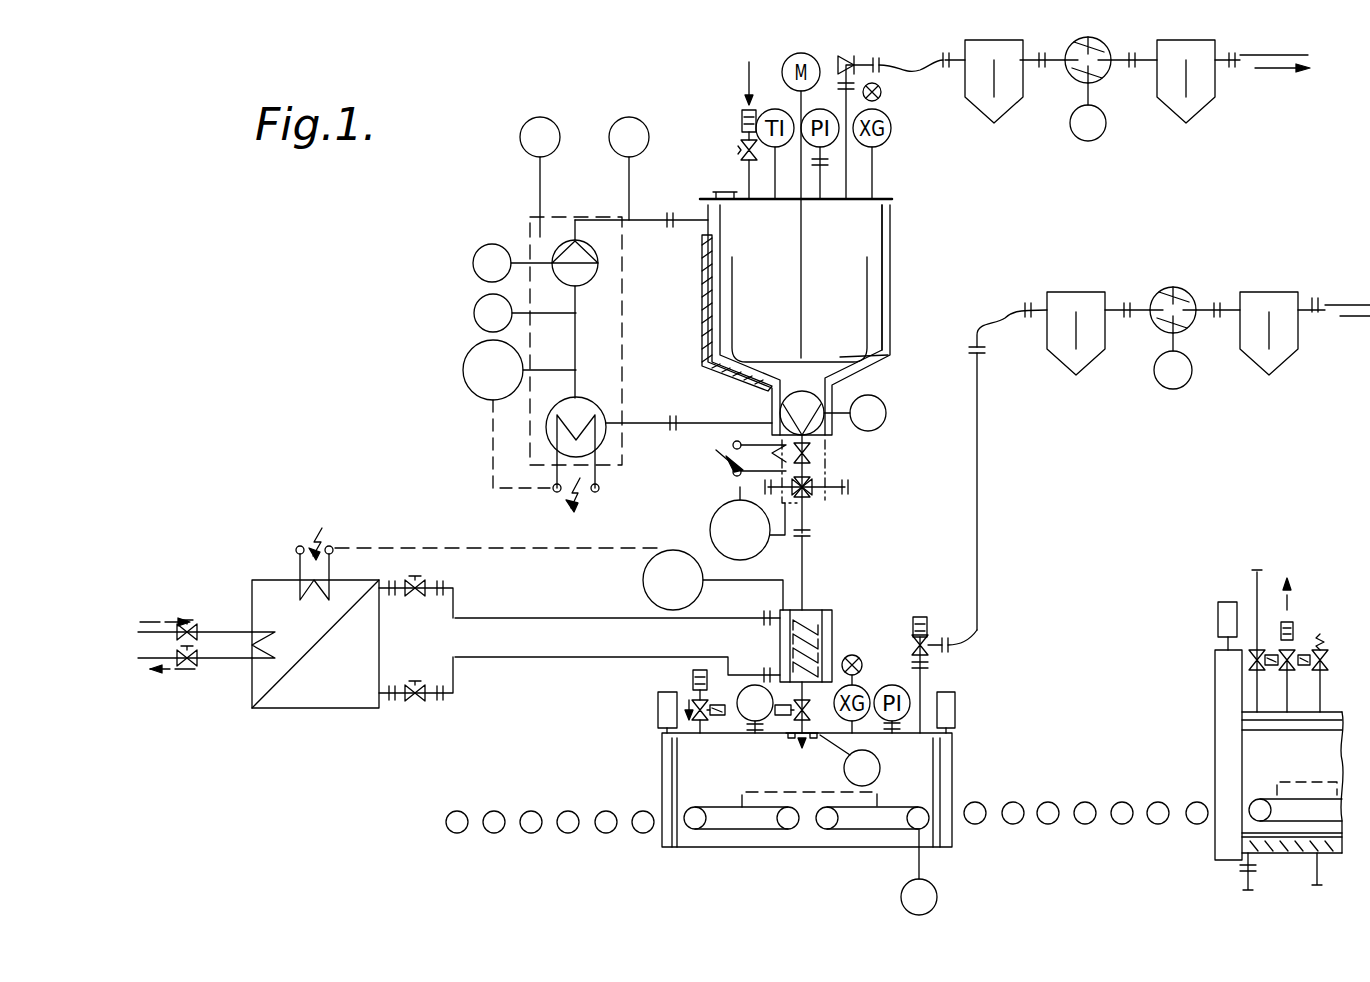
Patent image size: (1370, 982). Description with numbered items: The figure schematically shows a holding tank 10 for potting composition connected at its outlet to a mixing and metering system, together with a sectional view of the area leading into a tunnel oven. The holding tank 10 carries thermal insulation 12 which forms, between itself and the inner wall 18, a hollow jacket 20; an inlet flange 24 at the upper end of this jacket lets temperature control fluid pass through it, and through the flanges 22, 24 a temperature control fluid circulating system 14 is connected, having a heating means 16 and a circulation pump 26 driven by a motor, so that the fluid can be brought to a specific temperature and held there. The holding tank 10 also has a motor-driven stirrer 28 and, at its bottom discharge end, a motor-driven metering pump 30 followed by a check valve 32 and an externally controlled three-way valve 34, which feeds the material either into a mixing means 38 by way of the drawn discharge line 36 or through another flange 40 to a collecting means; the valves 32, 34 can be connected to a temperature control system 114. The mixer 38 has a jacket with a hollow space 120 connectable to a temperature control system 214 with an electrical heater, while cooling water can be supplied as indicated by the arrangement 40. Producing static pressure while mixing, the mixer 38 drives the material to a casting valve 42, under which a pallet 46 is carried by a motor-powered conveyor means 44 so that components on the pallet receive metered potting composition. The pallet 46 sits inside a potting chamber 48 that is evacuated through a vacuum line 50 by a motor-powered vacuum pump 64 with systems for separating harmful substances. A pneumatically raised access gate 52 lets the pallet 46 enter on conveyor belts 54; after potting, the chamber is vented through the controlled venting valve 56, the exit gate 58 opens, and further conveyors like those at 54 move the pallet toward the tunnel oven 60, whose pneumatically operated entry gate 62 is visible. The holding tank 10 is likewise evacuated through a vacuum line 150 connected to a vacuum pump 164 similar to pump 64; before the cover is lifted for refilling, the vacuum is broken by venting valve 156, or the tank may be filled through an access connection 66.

The holding tank 10 is at (892, 262).
The thermal insulation 12 is at (704, 306).
The temperature control fluid circulating system 14 is at (527, 234).
The heating means 16 is at (596, 443).
The inner wall 18 is at (888, 224).
The hollow jacket 20 is at (890, 316).
The flange 22 is at (672, 212).
The inlet flange 24 is at (672, 420).
The circulation pump 26 is at (598, 267).
The stirrer 28 is at (880, 358).
The metering pump 30 is at (782, 405).
The check valve 32 is at (812, 455).
The three-way valve 34 is at (815, 496).
The discharge line 36 is at (806, 540).
The mixing means 38 is at (832, 614).
The flange 40 is at (740, 488).
The casting valve 42 is at (790, 737).
The conveyor means 44 is at (800, 745).
The pallet 46 is at (765, 800).
The potting chamber 48 is at (958, 776).
The vacuum line 50 is at (932, 672).
The access gate 52 is at (660, 740).
The conveyor belts 54 is at (878, 822).
The controlled venting valve 56 is at (700, 668).
The exit gate 58 is at (955, 740).
The tunnel oven 60 is at (1300, 578).
The entry gate 62 is at (1215, 658).
The vacuum pump 64 is at (1170, 290).
The access connection 66 is at (725, 190).
The temperature control system 114 is at (760, 470).
The hollow space 120 is at (835, 641).
The vacuum line 150 is at (846, 178).
The venting valve 156 is at (745, 115).
The vacuum pump 164 is at (1072, 80).
The temperature control system 214 is at (356, 712).